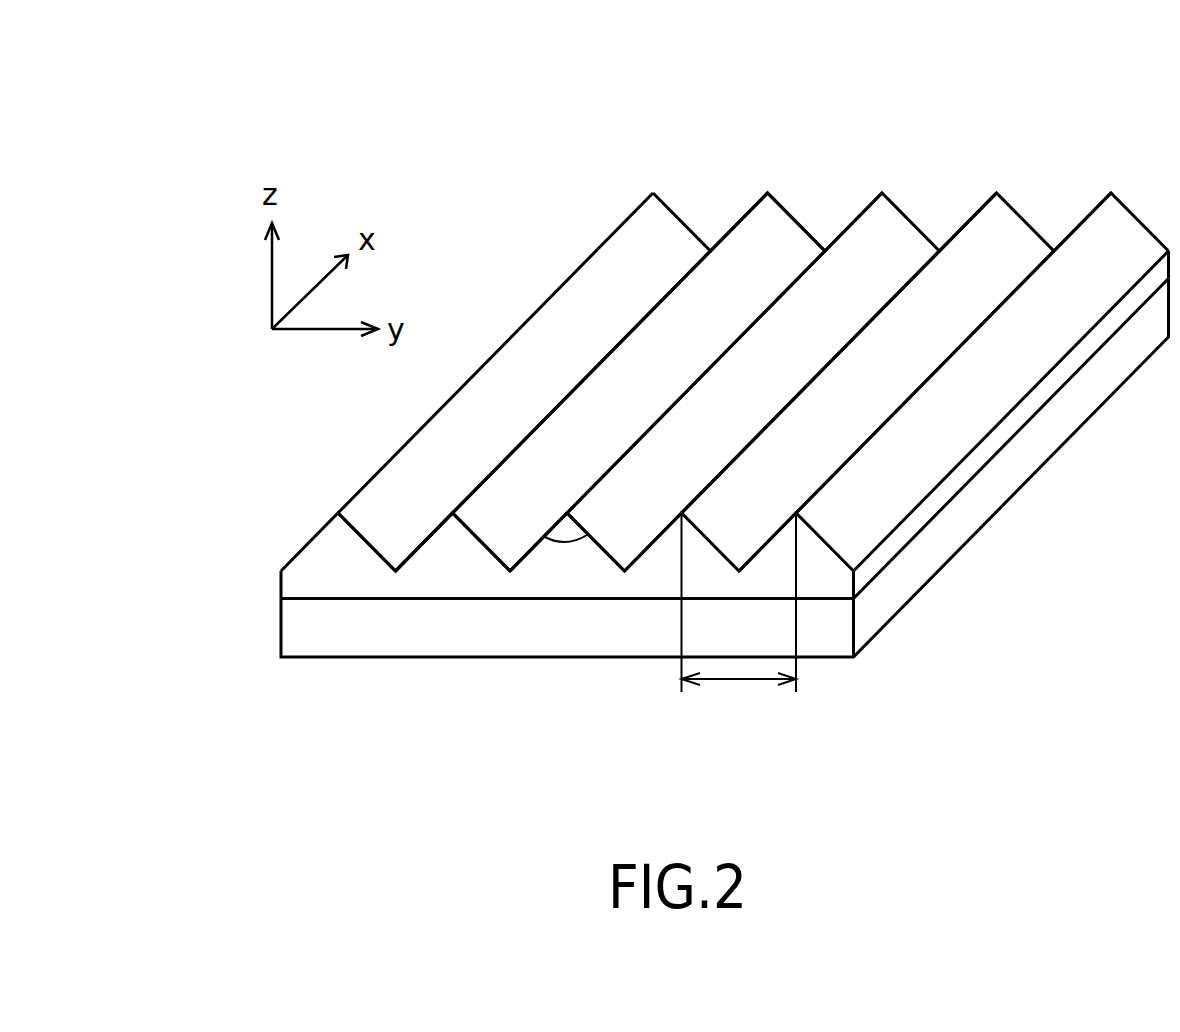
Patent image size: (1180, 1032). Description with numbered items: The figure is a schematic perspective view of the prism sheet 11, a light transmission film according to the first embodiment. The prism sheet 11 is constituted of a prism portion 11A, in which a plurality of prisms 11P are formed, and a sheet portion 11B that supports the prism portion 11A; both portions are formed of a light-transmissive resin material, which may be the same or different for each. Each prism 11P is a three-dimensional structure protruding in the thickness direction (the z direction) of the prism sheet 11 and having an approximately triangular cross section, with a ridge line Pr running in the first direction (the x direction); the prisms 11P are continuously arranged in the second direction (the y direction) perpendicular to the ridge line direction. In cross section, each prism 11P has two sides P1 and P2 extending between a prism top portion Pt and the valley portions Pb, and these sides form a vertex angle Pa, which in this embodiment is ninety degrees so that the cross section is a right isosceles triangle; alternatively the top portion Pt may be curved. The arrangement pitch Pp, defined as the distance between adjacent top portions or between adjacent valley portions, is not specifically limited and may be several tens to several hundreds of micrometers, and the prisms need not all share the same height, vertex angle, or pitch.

The prism sheet 11 is at (1150, 80).
The prism portion 11A is at (252, 508).
The sheet portion 11B is at (252, 605).
The prism 11P is at (784, 212).
The ridge line Pr is at (906, 283).
The prism top portion Pt is at (452, 513).
The valley portion Pb is at (396, 571).
The first side P1 is at (533, 547).
The second side P2 is at (602, 547).
The vertex angle Pa is at (570, 542).
The arrangement pitch Pp is at (739, 619).